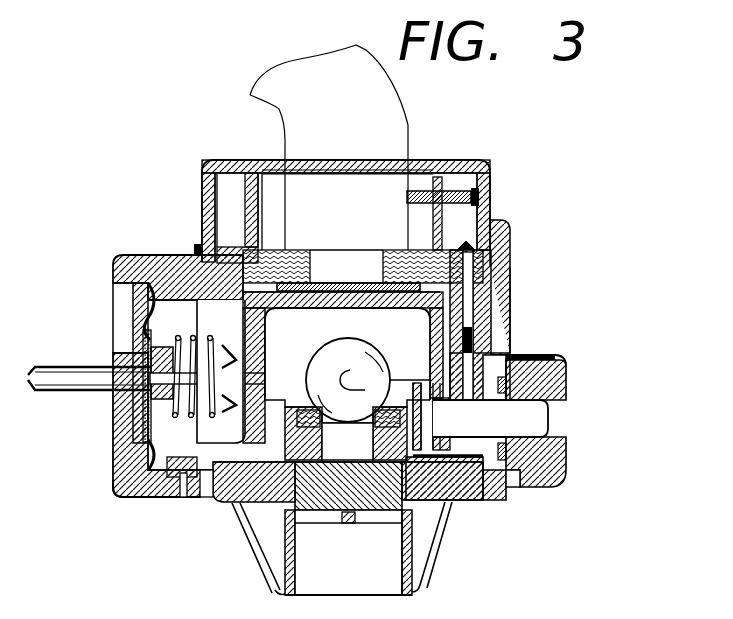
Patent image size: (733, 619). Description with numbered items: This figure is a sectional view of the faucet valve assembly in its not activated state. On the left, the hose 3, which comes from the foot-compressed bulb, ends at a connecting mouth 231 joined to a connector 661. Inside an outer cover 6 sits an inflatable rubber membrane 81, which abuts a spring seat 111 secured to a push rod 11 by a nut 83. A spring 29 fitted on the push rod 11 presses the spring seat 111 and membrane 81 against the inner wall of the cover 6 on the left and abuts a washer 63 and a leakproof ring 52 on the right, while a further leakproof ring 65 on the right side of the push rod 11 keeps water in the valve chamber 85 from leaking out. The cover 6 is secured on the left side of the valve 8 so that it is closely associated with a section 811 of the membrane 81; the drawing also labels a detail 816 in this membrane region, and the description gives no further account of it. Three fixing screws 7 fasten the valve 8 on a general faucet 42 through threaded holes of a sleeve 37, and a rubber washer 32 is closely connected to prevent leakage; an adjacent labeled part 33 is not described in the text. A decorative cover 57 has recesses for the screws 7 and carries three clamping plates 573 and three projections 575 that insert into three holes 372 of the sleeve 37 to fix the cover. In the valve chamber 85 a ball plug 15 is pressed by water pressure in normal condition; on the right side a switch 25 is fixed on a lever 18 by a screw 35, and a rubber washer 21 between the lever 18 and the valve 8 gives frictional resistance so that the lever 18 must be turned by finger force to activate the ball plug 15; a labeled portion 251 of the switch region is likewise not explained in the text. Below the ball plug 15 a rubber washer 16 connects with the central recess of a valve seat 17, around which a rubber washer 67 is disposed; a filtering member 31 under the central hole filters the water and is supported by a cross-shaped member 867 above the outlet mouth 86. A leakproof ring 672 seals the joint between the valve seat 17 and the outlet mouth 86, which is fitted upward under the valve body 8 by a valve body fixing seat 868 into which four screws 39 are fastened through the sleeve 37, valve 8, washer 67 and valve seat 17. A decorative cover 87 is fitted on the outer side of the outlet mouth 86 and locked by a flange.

The hose 3 is at (48, 388).
The outer cover 6 is at (135, 278).
The fixing screws 7 is at (482, 195).
The valve 8 is at (197, 246).
The push rod 11 is at (147, 422).
The ball plug 15 is at (500, 354).
The rubber washer 16 is at (255, 505).
The valve seat 17 is at (463, 500).
The lever 18 is at (555, 420).
The rubber washer 21 is at (509, 358).
The switch 25 is at (559, 410).
The spring 29 is at (163, 488).
The filtering member 31 is at (419, 527).
The rubber washer 32 is at (452, 282).
The stem housing 33 is at (468, 291).
The screw 35 is at (536, 468).
The sleeve 37 is at (240, 255).
The screws 39 is at (466, 245).
The faucet 42 is at (290, 105).
The leakproof ring 52 is at (220, 350).
The decorative cover 57 is at (466, 160).
The washer 63 is at (240, 410).
The leakproof ring 65 is at (288, 362).
The rubber washer 67 is at (220, 497).
The membrane 81 is at (140, 293).
The nut 83 is at (143, 372).
The valve chamber 85 is at (492, 304).
The outlet mouth 86 is at (420, 590).
The decorative cover 87 is at (430, 565).
The spring seat 111 is at (140, 470).
The connecting mouth 231 is at (147, 356).
The notch 251 is at (502, 490).
The holes 372 is at (258, 224).
The clamping plates 573 is at (243, 192).
The projections 575 is at (258, 228).
The connector 661 is at (150, 370).
The leakproof ring 672 is at (275, 578).
The section of the membrane 811 is at (123, 499).
The slot 816 is at (180, 497).
The cross-shaped member 867 is at (318, 520).
The valve body fixing seat 868 is at (247, 503).